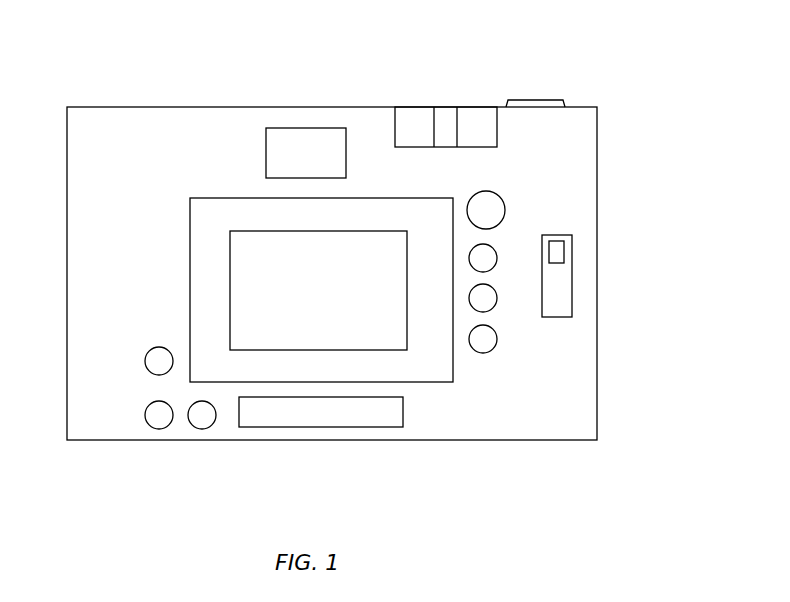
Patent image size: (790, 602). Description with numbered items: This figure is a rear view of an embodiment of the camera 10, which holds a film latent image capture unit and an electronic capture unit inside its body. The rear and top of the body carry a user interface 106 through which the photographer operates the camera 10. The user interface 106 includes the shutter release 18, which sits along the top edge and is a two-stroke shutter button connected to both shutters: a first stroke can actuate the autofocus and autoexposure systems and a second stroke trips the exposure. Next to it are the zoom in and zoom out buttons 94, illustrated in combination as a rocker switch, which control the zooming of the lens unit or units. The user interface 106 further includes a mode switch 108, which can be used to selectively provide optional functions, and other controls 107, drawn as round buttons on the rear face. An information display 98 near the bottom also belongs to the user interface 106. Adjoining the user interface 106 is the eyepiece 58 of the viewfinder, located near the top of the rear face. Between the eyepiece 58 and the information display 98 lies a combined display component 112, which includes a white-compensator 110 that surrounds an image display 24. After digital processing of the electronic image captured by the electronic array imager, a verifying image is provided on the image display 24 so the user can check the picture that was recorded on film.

The camera 10 is at (205, 82).
The user interface 106 is at (167, 147).
The eyepiece 58 is at (300, 138).
The zoom in and zoom out buttons 94 is at (469, 107).
The shutter release 18 is at (535, 100).
The white-compensator 110 is at (342, 377).
The image display 24 is at (334, 294).
The other controls 107 is at (492, 248).
The mode switch 108 is at (562, 291).
The information display 98 is at (335, 413).
The combined display component 112 is at (437, 384).